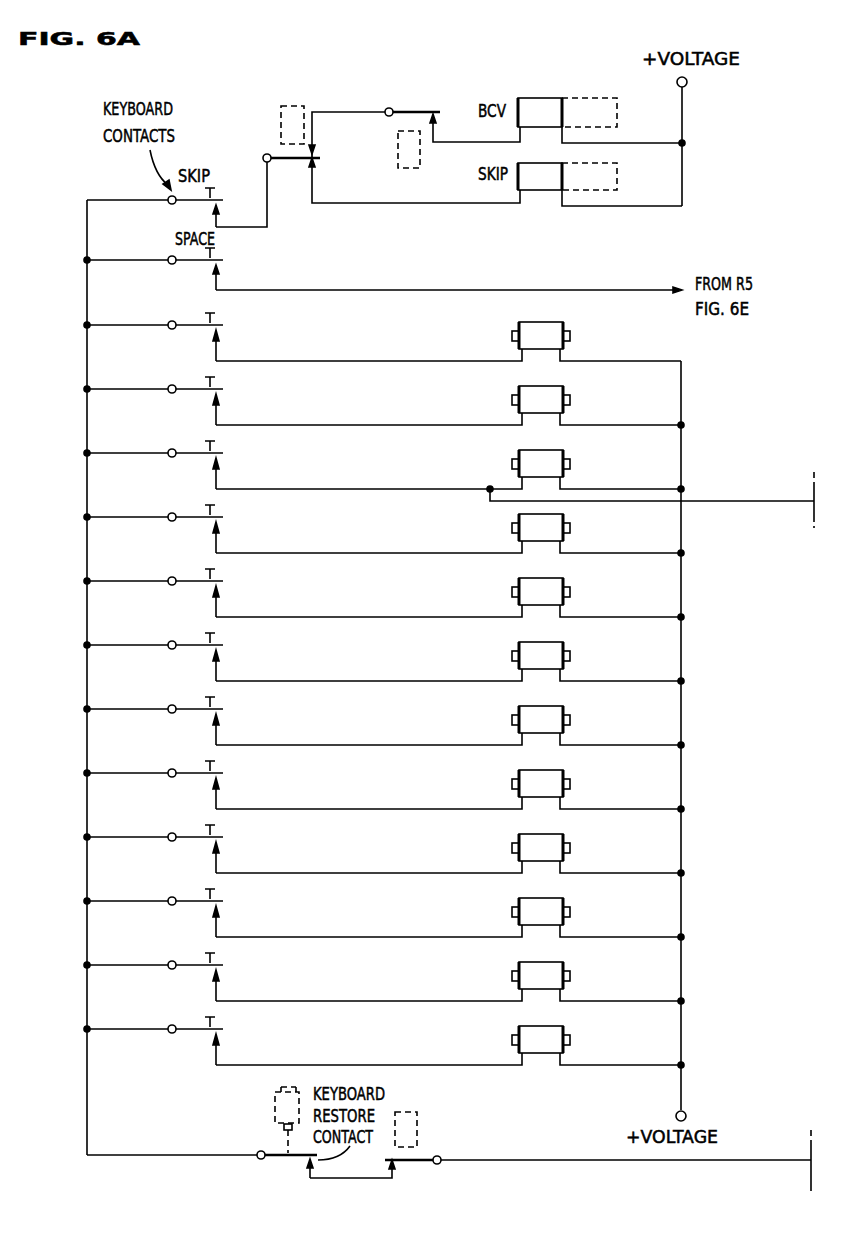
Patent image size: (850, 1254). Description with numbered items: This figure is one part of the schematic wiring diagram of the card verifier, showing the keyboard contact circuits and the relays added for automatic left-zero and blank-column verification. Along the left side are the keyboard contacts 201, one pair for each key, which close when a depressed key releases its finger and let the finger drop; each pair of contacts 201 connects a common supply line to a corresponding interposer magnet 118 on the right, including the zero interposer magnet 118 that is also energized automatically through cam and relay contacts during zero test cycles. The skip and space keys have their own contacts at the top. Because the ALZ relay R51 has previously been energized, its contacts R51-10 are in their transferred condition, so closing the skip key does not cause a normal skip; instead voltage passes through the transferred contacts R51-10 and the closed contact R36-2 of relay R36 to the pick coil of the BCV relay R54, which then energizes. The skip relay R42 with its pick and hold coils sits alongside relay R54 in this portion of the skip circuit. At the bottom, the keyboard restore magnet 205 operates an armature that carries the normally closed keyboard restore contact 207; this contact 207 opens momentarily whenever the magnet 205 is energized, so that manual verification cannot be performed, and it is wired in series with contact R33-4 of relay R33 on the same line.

The interposer magnet 118 is at (543, 450).
The contacts 201 is at (192, 643).
The keyboard restore magnet 205 is at (275, 1110).
The keyboard restore contact 207 is at (300, 1158).
The ALZ relay R51 is at (292, 105).
The relay contacts R51-10 is at (318, 156).
The relay R36 is at (421, 150).
The relay contact R36-2 is at (438, 118).
The BCV relay R54 is at (545, 98).
The skip relay R42 is at (535, 163).
The relay R33 is at (417, 1135).
The relay contact R33-4 is at (398, 1163).